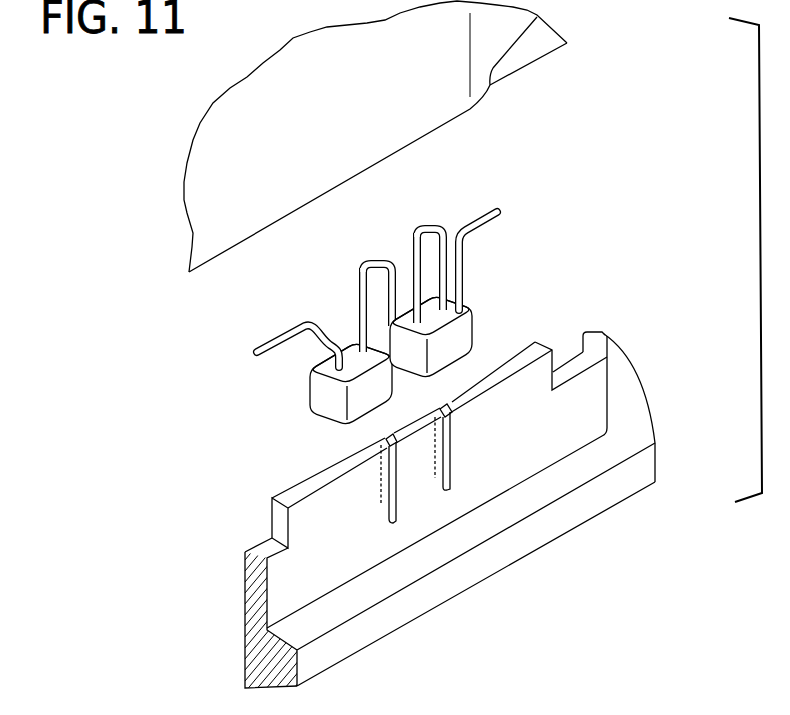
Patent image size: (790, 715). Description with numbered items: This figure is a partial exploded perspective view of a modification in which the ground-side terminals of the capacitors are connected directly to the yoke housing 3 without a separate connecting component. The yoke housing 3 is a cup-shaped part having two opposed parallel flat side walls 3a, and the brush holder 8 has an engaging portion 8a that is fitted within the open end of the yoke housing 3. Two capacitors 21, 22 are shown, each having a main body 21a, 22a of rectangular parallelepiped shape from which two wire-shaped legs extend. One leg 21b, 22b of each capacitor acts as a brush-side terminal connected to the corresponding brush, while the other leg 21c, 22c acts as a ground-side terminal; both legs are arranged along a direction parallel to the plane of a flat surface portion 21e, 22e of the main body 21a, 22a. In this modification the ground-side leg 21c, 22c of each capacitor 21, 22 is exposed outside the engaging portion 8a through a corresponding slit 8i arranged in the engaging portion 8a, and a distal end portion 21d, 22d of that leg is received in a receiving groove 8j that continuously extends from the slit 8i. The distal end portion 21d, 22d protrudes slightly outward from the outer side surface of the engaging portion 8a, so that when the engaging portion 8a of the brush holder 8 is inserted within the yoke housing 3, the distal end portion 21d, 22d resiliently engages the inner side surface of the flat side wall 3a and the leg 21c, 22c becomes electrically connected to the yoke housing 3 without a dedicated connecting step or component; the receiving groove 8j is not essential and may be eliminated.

The yoke housing 3 is at (540, 57).
The flat side wall 3a is at (448, 115).
The brush holder 8 is at (441, 523).
The engaging portion 8a is at (275, 571).
The slit 8i is at (437, 420).
The receiving groove 8j is at (450, 488).
The capacitor 21 is at (472, 314).
The main body 21a is at (473, 312).
The leg 21b is at (498, 217).
The leg 21c is at (412, 247).
The distal end portion 21d is at (433, 255).
The flat surface portion 21e is at (455, 344).
The capacitor 22 is at (312, 409).
The main body 22a is at (310, 397).
The leg 22b is at (273, 341).
The leg 22c is at (358, 311).
The distal end portion 22d is at (375, 268).
The flat surface portion 22e is at (352, 432).